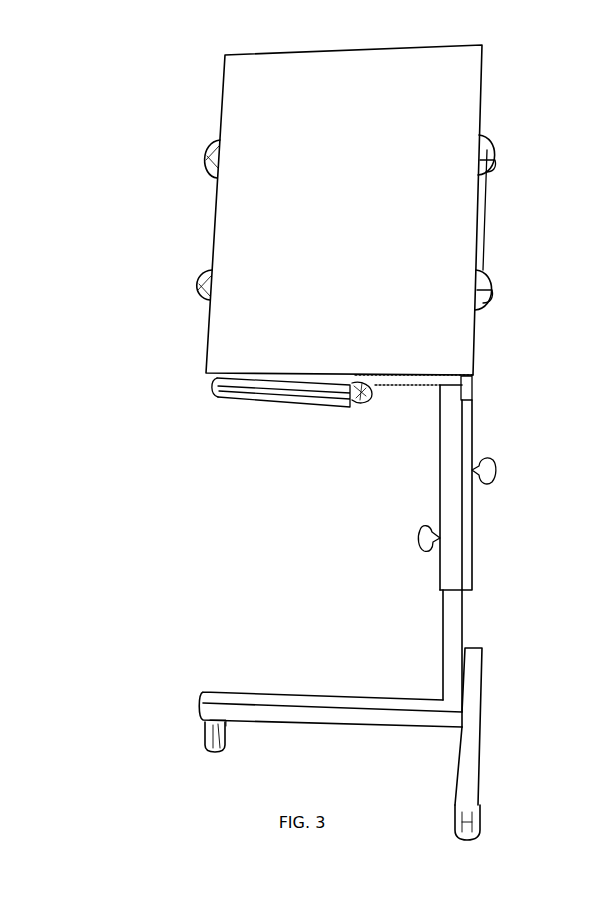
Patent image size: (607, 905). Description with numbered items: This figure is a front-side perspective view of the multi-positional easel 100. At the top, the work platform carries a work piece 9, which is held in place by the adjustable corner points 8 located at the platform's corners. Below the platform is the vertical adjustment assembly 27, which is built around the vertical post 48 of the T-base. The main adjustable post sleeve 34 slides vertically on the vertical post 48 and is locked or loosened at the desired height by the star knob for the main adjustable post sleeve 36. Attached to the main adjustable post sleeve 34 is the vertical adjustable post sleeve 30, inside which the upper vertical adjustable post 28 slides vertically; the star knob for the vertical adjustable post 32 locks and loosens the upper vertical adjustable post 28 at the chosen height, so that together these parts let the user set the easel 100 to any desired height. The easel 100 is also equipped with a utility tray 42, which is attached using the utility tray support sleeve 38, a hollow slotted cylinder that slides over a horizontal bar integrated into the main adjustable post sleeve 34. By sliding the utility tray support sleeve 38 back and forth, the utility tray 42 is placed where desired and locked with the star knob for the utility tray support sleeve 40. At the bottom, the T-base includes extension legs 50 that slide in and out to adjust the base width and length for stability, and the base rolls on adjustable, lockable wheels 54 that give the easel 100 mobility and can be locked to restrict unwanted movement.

The work piece 9 is at (484, 75).
The adjustable corner points 8 is at (203, 158).
The upper vertical adjustable post 28 is at (477, 390).
The utility tray 42 is at (227, 410).
The star knob for the utility tray support sleeve 40 is at (350, 410).
The utility tray support sleeve 38 is at (370, 398).
The main adjustable post sleeve 34 is at (440, 468).
The star knob for the vertical adjustable post 32 is at (497, 472).
The vertical adjustable post sleeve 30 is at (475, 528).
The star knob for the main adjustable post sleeve 36 is at (420, 540).
The vertical adjustment assembly 27 is at (509, 559).
The vertical post 48 is at (452, 620).
The easel 100 is at (219, 608).
The extension legs 50 is at (337, 696).
The wheels 54 is at (482, 683).